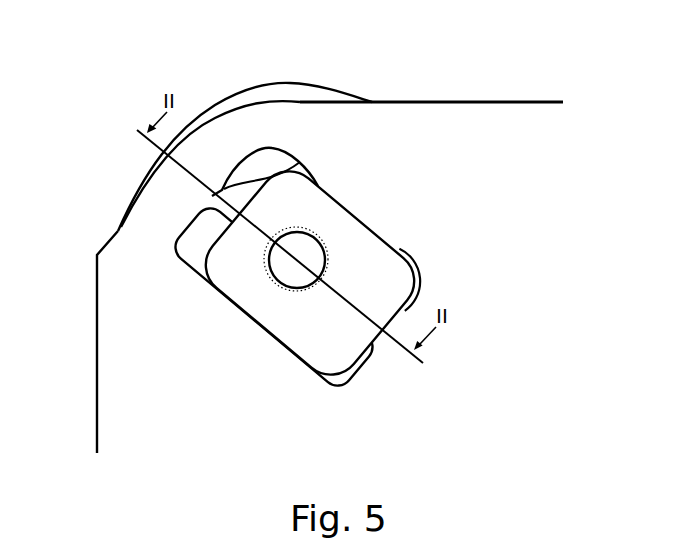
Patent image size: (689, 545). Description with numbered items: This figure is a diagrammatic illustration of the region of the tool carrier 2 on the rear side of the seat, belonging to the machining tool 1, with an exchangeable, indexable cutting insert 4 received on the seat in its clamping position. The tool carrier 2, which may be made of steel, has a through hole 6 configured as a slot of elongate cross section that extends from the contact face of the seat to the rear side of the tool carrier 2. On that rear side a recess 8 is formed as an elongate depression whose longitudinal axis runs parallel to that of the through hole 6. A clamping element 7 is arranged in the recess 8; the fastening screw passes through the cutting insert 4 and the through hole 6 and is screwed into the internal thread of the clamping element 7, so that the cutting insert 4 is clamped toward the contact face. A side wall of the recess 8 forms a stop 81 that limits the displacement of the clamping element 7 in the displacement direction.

The machining tool 1 is at (118, 103).
The tool carrier 2 is at (482, 135).
The cutting insert 4 is at (204, 117).
The through hole 6 is at (205, 200).
The clamping element 7 is at (365, 257).
The recess 8 is at (258, 165).
The stop 81 is at (238, 224).